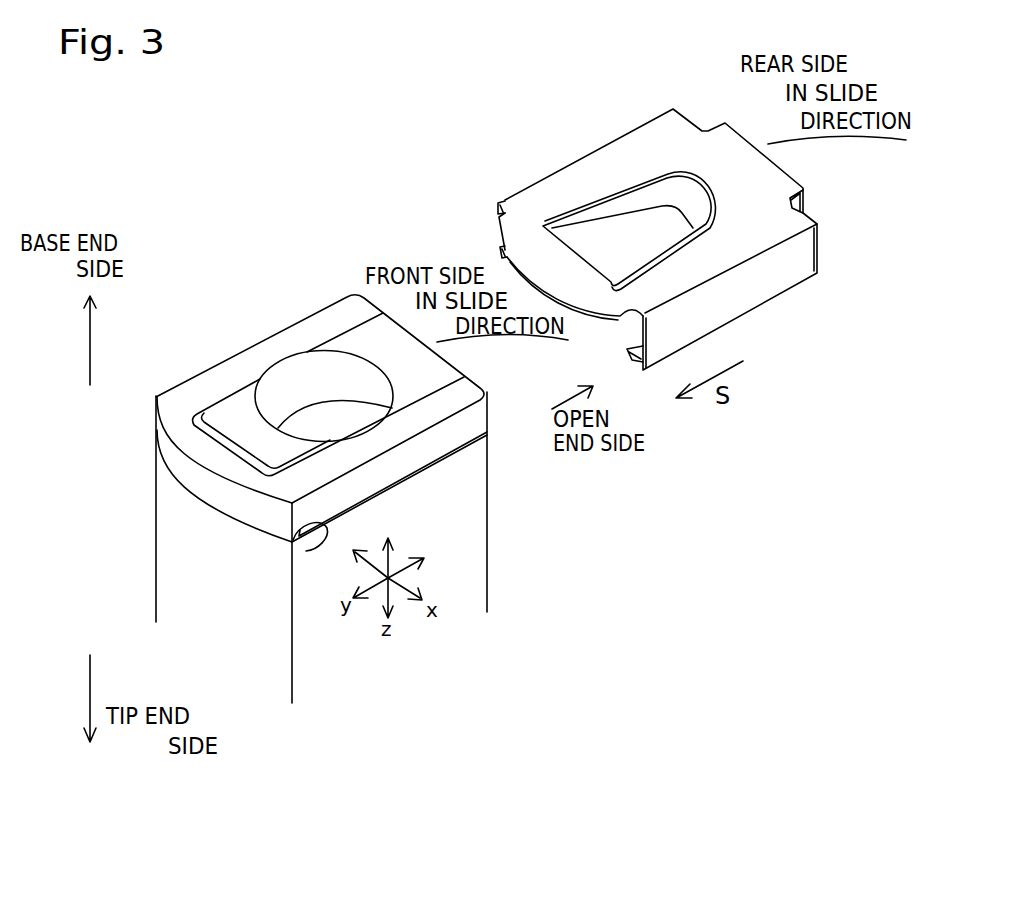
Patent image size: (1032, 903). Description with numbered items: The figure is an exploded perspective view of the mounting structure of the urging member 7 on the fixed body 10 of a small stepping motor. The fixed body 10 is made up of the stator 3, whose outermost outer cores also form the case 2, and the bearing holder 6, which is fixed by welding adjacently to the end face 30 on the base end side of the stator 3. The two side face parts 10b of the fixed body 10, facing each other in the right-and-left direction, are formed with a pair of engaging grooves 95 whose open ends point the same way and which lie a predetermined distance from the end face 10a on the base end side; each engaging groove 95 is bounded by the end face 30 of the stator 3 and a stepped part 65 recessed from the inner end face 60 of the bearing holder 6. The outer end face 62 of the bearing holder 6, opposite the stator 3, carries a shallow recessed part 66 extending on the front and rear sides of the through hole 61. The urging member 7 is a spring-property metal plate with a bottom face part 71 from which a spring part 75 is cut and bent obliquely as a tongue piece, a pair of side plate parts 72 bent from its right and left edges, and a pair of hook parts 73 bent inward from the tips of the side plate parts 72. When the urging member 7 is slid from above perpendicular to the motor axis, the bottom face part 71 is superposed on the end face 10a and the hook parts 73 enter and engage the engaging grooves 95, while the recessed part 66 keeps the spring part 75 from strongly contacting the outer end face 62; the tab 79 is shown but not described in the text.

The case 2 is at (203, 594).
The stator 3 is at (165, 516).
The bearing holder 6 is at (179, 433).
The urging member 7 is at (653, 100).
The fixed body 10 is at (84, 545).
The end face 10a is at (438, 410).
The side face parts 10b is at (470, 572).
The end face 30 is at (323, 549).
The inner end face 60 is at (291, 541).
The through hole 61 is at (289, 373).
The outer end face 62 is at (215, 383).
The stepped parts 65 is at (415, 496).
The engaging grooves 95 is at (389, 487).
The recessed part 66 is at (365, 341).
The bottom face part 71 is at (781, 234).
The side plate parts 72 is at (505, 207).
The hook parts 73 is at (503, 256).
The spring part 75 is at (613, 233).
The stopper tab 79 is at (808, 200).